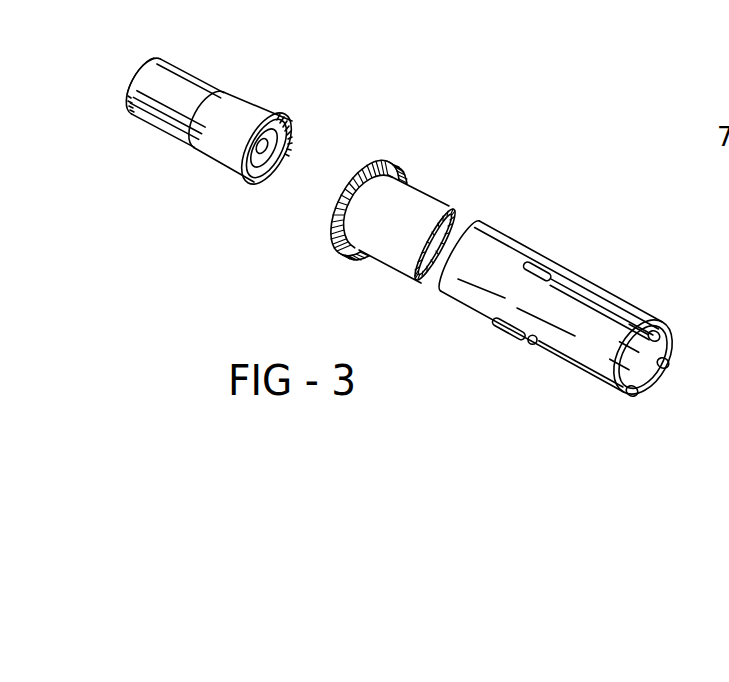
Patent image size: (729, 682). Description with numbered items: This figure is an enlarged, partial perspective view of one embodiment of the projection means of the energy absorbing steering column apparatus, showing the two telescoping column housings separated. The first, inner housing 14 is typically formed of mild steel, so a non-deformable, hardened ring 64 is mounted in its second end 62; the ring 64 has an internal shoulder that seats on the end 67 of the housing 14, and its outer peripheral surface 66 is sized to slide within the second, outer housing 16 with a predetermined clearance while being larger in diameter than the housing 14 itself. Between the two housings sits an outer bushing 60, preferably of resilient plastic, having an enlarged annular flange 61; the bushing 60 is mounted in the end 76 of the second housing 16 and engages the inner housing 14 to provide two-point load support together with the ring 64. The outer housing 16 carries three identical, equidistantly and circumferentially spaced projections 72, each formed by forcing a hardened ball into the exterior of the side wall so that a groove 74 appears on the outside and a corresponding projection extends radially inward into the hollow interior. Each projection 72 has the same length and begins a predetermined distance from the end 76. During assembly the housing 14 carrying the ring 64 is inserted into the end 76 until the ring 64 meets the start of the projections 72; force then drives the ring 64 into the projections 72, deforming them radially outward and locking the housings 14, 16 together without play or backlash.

The first, inner housing 14 is at (228, 119).
The second end of the first steering column housing 62 is at (210, 160).
The ring 64 is at (240, 106).
The outer peripheral surface 66 is at (253, 111).
The end of the housing 67 is at (273, 163).
The outer bushing 60 is at (347, 191).
The end of the second housing 76 is at (364, 187).
The annular flange 61 is at (386, 162).
The second, outer housing 16 is at (584, 304).
The groove 74 is at (551, 281).
The projections 72 is at (659, 326).